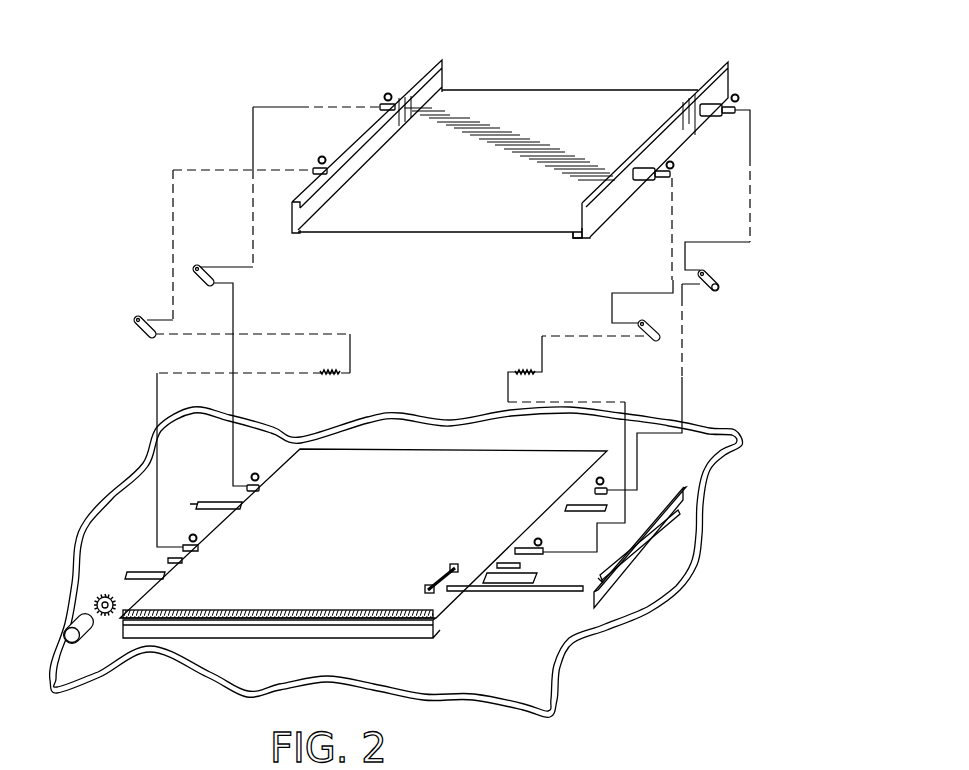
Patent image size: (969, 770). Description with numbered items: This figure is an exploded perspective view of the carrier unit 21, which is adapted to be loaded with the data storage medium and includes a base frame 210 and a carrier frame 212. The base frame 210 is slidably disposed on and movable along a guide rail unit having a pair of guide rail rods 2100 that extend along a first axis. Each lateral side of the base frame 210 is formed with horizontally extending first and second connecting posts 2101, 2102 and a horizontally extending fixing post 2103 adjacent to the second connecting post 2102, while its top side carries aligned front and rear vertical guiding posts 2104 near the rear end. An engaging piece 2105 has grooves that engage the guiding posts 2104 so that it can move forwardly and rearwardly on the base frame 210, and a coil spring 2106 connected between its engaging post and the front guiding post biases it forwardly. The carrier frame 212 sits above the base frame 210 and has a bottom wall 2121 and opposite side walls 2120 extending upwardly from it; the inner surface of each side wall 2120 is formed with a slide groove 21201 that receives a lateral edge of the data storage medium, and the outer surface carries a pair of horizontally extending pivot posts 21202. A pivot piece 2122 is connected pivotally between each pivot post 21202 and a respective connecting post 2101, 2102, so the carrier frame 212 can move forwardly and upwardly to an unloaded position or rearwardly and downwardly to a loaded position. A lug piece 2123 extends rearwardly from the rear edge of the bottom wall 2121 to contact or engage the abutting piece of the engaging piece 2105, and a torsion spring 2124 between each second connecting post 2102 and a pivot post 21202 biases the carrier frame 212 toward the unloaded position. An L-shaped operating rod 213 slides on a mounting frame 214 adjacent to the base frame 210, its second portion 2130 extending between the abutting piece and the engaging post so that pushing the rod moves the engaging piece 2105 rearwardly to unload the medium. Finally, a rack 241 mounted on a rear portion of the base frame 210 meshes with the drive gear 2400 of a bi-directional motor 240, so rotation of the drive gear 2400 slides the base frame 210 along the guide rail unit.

The carrier unit 21 is at (447, 370).
The base frame 210 is at (404, 523).
The guide rail rods 2100 is at (216, 501).
The first connecting post 2101 is at (254, 473).
The second connecting post 2102 is at (184, 546).
The fixing post 2103 is at (172, 559).
The vertical guiding posts 2104 is at (452, 567).
The engaging piece 2105 is at (433, 588).
The coil spring 2106 is at (447, 570).
The carrier frame 212 is at (467, 220).
The side walls 2120 is at (727, 77).
The slide groove 21201 is at (440, 83).
The pivot posts 21202 is at (736, 112).
The bottom wall 2121 is at (577, 153).
The pivot piece 2122 is at (706, 281).
The lug piece 2123 is at (578, 238).
The torsion spring 2124 is at (517, 368).
The L-shaped operating rod 213 is at (648, 525).
The second portion 2130 is at (548, 591).
The mounting frame 214 is at (628, 568).
The bi-directional motor 240 is at (70, 625).
The drive gear 2400 is at (102, 597).
The rack 241 is at (262, 608).